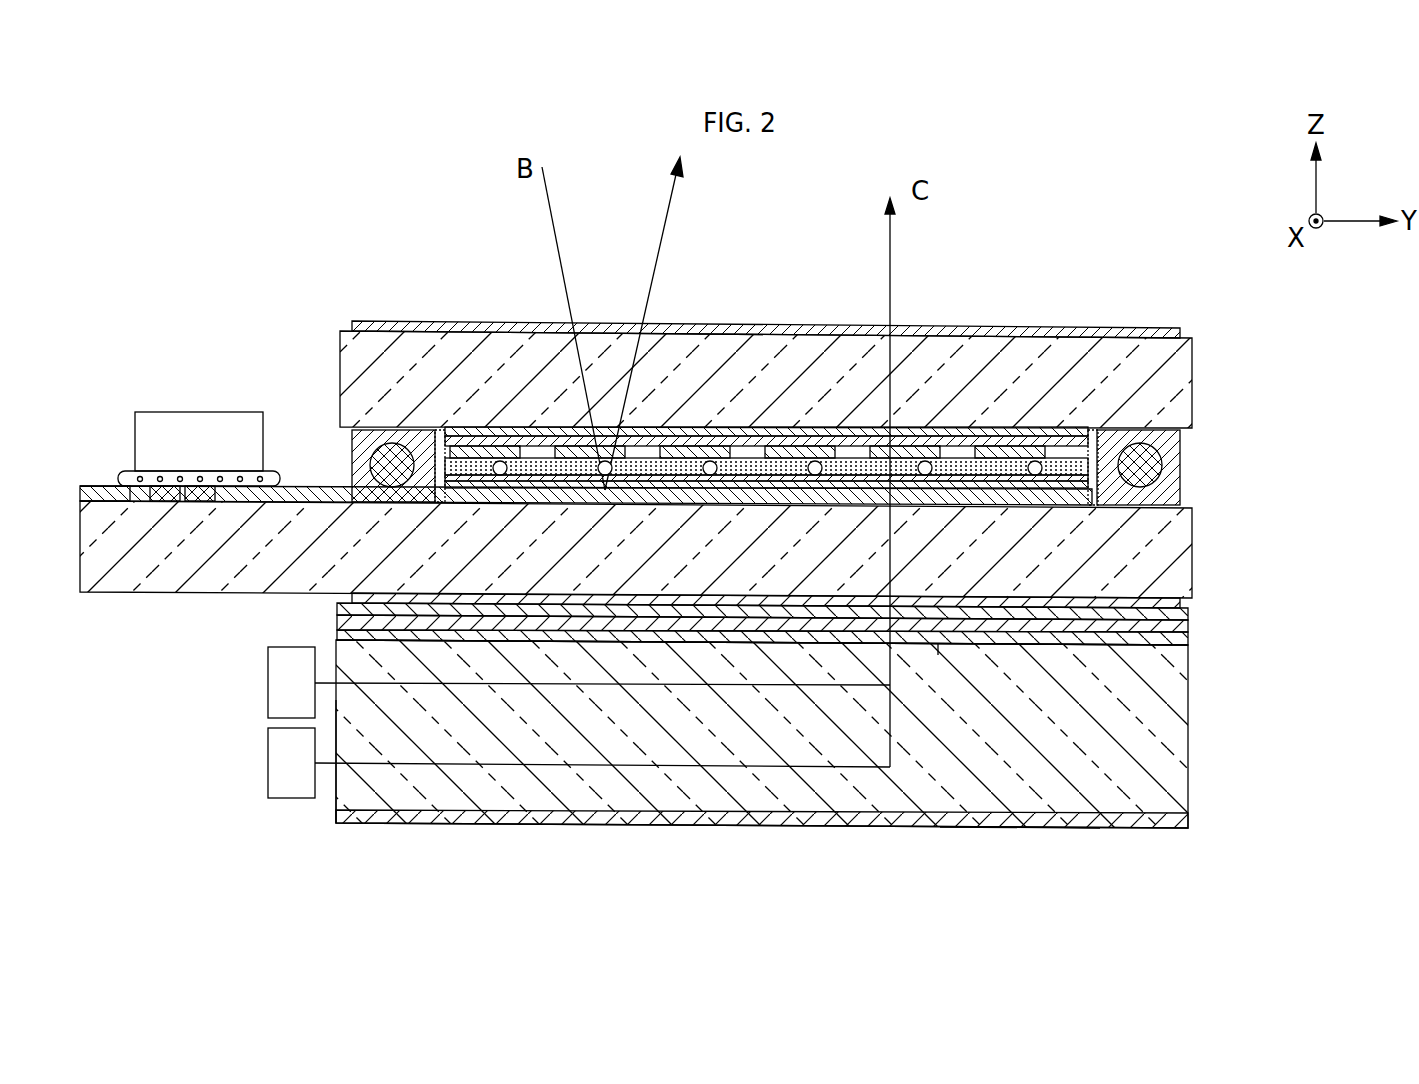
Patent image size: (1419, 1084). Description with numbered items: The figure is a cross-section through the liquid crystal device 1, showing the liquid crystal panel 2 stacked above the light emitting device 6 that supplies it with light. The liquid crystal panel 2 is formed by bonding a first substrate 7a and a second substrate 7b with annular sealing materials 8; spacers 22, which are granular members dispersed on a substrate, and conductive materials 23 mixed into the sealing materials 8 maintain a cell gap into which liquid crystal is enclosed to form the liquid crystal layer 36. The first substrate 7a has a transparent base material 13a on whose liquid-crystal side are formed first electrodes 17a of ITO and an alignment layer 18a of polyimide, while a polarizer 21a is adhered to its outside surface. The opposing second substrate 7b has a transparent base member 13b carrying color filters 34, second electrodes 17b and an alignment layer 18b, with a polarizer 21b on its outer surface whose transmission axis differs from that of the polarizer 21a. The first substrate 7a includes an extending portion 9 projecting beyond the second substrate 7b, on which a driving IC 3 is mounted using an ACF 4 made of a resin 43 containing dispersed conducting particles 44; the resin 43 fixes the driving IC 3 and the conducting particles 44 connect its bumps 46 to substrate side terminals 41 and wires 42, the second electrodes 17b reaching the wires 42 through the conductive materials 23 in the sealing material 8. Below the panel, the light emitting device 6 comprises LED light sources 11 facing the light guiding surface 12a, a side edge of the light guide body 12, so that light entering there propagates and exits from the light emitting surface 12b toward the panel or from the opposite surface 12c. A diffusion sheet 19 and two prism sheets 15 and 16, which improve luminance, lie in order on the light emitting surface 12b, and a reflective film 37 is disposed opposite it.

The liquid crystal device 1 is at (1392, 830).
The liquid crystal panel 2 is at (1338, 320).
The driving IC 3 is at (150, 412).
The ACF 4 is at (222, 649).
The light emitting device 6 is at (1272, 612).
The first substrate 7a is at (1272, 480).
The second substrate 7b is at (1272, 320).
The sealing material 8 is at (375, 450).
The extending portion 9 is at (333, 289).
The light source 11 is at (268, 683).
The light guide body 12 is at (1175, 745).
The light guiding surface 12a is at (325, 810).
The light emitting surface 12b is at (1047, 644).
The surface opposite the light emitting surface 12c is at (1010, 842).
The base material 13a is at (1170, 553).
The base member 13b is at (1170, 378).
The prism sheet 15 is at (1190, 614).
The prism sheet 16 is at (1185, 603).
The first electrode 17a is at (820, 481).
The second electrode 17b is at (900, 432).
The alignment layer 18a is at (735, 488).
The alignment layer 18b is at (770, 446).
The diffusion sheet 19 is at (1190, 626).
The polarizer 21a is at (955, 648).
The polarizer 21b is at (1080, 327).
The spacer 22 is at (500, 461).
The conductive material 23 is at (378, 468).
The color filter 34 is at (975, 440).
The liquid crystal layer 36 is at (700, 458).
The reflective film 37 is at (650, 826).
The terminal 41 is at (100, 486).
The wire 42 is at (300, 488).
The resin 43 is at (200, 501).
The conducting particle 44 is at (165, 501).
The bump 46 is at (245, 477).